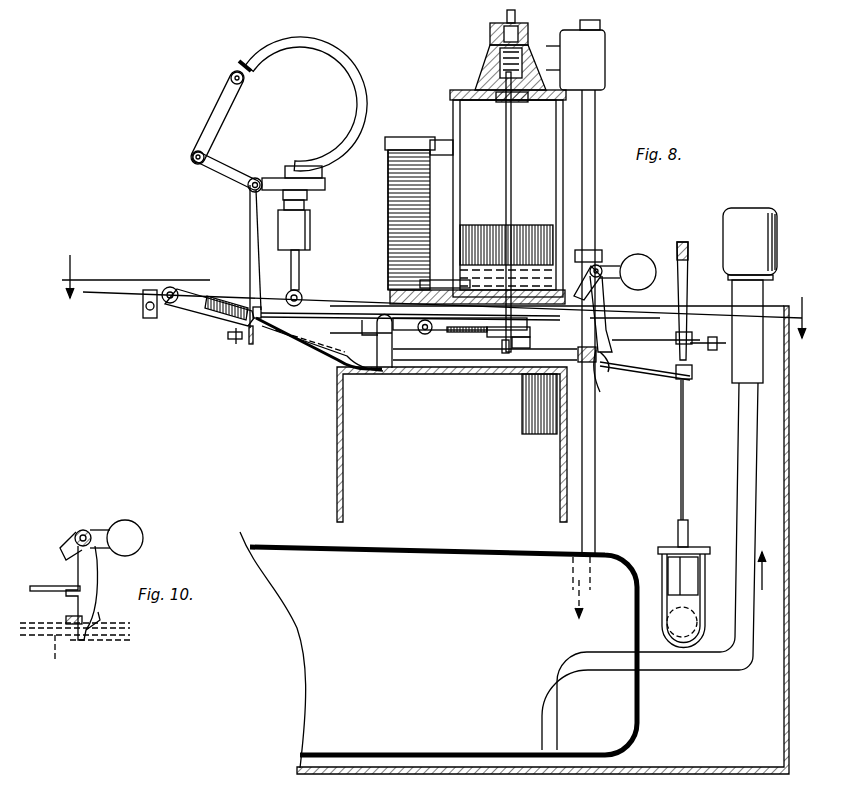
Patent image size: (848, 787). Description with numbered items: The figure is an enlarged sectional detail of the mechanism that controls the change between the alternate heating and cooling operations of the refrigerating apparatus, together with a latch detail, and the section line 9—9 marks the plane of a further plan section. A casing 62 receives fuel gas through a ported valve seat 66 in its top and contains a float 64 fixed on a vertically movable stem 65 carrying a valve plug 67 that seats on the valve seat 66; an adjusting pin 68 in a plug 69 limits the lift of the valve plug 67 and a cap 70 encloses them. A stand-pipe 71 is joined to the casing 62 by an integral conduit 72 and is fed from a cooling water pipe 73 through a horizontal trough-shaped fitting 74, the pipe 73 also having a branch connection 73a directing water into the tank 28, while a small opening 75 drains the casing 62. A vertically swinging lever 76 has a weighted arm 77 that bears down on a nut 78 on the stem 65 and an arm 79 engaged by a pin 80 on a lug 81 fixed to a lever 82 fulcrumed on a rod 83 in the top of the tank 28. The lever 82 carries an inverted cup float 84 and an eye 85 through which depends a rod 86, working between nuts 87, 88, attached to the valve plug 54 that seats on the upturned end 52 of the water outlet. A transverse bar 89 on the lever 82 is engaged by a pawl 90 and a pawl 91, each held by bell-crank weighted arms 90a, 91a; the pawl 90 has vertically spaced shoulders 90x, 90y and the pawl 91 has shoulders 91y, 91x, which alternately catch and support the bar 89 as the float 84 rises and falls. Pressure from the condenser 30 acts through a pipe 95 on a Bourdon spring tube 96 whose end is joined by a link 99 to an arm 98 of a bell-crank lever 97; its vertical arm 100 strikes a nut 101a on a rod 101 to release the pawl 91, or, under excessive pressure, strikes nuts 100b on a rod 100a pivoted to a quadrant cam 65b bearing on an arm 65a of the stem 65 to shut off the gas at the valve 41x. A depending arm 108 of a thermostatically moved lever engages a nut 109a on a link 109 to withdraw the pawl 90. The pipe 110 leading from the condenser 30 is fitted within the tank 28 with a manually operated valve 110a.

In FIG. 8, the section line 9 is at (430, 312).
In FIG. 8, the water tank 28 is at (499, 545).
In FIG. 8, the condenser 30 is at (344, 752).
In FIG. 8, the fuel gas valve 41x is at (465, 84).
In FIG. 8, the upturned pipe end 52 is at (662, 585).
In FIG. 8, the valve plug 54 is at (700, 548).
In FIG. 8, the casing 62 is at (566, 128).
In FIG. 8, the float 64 is at (506, 230).
In FIG. 8, the stem 65 is at (512, 225).
In FIG. 8, the laterally extending arm 65a is at (506, 354).
In FIG. 8, the cam 65b is at (532, 344).
In FIG. 8, the ported valve seat 66 is at (496, 96).
In FIG. 8, the valve plug 67 is at (495, 62).
In FIG. 8, the adjusting pin 68 is at (528, 26).
In FIG. 8, the plug 69 is at (560, 40).
In FIG. 8, the cap 70 is at (507, 30).
In FIG. 8, the stand-pipe 71 is at (388, 208).
In FIG. 8, the integral conduit 72 is at (436, 137).
In FIG. 8, the cooling water supply pipe 73 is at (596, 204).
In FIG. 8, the branch connection 73a is at (584, 428).
In FIG. 8, the trough-shaped fitting 74 is at (436, 282).
In FIG. 8, the small opening 75 is at (530, 290).
In FIG. 8, the vertically swinging lever 76 is at (445, 332).
In FIG. 8, the weighted arm 77 is at (480, 334).
In FIG. 8, the nut 78 is at (490, 362).
In FIG. 8, the arm 79 is at (364, 318).
In FIG. 8, the pin 80 is at (384, 316).
In FIG. 8, the lug 81 is at (370, 347).
In FIG. 8, the float lever 82 is at (318, 350).
In FIG. 10, the float lever 82 is at (118, 642).
In FIG. 8, the rod 83 is at (175, 288).
In FIG. 8, the float 84 is at (337, 442).
In FIG. 10, the float 84 is at (58, 660).
In FIG. 8, the eye 85 is at (678, 378).
In FIG. 8, the rod 86 is at (681, 428).
In FIG. 8, the nut 87 is at (692, 380).
In FIG. 8, the nut 88 is at (692, 350).
In FIG. 8, the transverse bar 89 is at (578, 354).
In FIG. 10, the transverse bar 89 is at (70, 618).
In FIG. 8, the pawl 90 is at (606, 322).
In FIG. 8, the weighted arm 90a is at (642, 260).
In FIG. 8, the horizontal shoulder 90x is at (606, 372).
In FIG. 8, the horizontal shoulder 90y is at (600, 392).
In FIG. 8, the pawl 91 is at (600, 322).
In FIG. 10, the pawl 91 is at (98, 576).
In FIG. 10, the weighted arm 91a is at (124, 520).
In FIG. 10, the shoulder 91x is at (100, 618).
In FIG. 10, the horizontal shoulder 91y is at (76, 582).
In FIG. 8, the pipe 95 is at (296, 290).
In FIG. 8, the Bourdon spring tube 96 is at (352, 74).
In FIG. 8, the bell-crank lever 97 is at (252, 211).
In FIG. 8, the arm 98 is at (200, 168).
In FIG. 8, the link 99 is at (218, 113).
In FIG. 8, the vertical arm 100 is at (248, 226).
In FIG. 8, the rod 100a is at (318, 340).
In FIG. 8, the nuts 100b is at (232, 340).
In FIG. 8, the rod 101 is at (298, 313).
In FIG. 10, the rod 101 is at (40, 586).
In FIG. 8, the nut 101a is at (259, 306).
In FIG. 8, the depending arm 108 is at (688, 260).
In FIG. 8, the link 109 is at (664, 342).
In FIG. 8, the nut 109a is at (714, 332).
In FIG. 8, the pipe 110 is at (682, 664).
In FIG. 8, the manually operated valve 110a is at (756, 290).